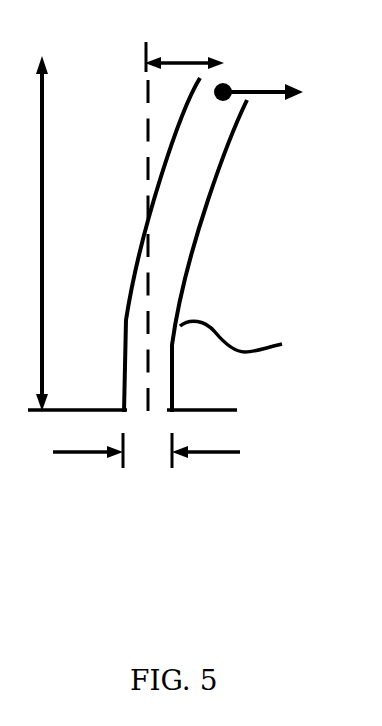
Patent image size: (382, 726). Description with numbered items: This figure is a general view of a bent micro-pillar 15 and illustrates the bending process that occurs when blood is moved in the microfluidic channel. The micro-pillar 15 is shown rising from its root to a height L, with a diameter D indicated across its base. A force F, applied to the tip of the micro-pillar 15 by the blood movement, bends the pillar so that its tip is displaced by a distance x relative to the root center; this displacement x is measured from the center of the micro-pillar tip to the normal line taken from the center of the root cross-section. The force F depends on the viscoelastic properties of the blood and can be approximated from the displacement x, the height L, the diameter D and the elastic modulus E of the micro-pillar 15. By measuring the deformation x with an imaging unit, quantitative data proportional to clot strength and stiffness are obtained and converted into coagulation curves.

The micro-pillar 15 is at (188, 222).
The height of the micro-pillar L is at (26, 233).
The displacement of the micro-pillar tip X is at (184, 42).
The force applied to the micro-pillar F is at (273, 123).
The elastic modulus E is at (256, 345).
The diameter of the micro-pillar D is at (146, 477).